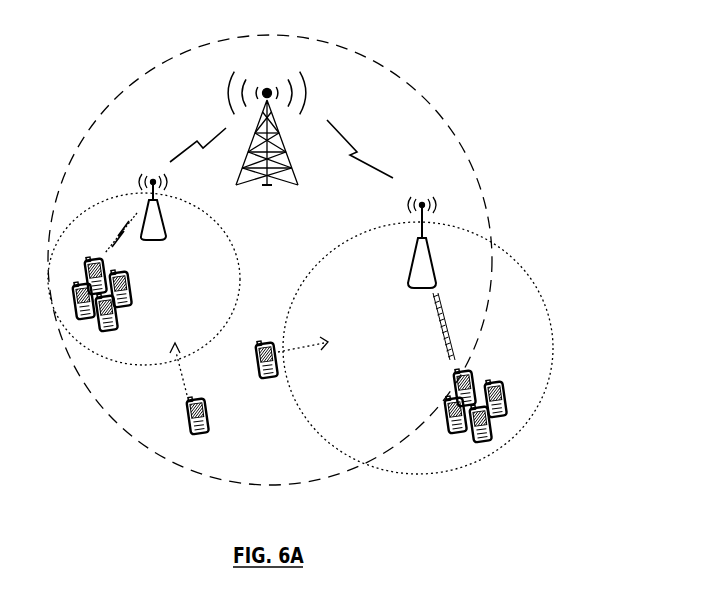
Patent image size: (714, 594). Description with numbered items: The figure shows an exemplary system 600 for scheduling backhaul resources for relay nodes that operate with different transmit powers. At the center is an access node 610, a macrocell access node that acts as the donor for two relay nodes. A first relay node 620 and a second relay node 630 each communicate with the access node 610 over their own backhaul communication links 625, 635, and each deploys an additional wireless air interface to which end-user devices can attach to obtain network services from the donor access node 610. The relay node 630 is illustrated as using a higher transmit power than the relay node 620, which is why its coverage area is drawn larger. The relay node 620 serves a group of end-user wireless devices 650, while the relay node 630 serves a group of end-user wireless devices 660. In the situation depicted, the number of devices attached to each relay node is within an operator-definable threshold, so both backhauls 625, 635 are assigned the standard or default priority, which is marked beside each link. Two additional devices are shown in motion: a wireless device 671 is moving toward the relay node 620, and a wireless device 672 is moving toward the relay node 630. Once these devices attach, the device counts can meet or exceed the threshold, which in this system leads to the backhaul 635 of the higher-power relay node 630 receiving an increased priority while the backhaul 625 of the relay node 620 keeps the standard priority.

The system 600 is at (461, 44).
The access node 610 is at (265, 91).
The relay node 620 is at (168, 233).
The backhaul communication link 625 is at (198, 143).
The relay node 630 is at (408, 257).
The backhaul communication link 635 is at (360, 150).
The end-user wireless devices 650 is at (103, 348).
The end-user wireless devices 660 is at (440, 395).
The wireless device 671 is at (208, 430).
The wireless device 672 is at (262, 380).